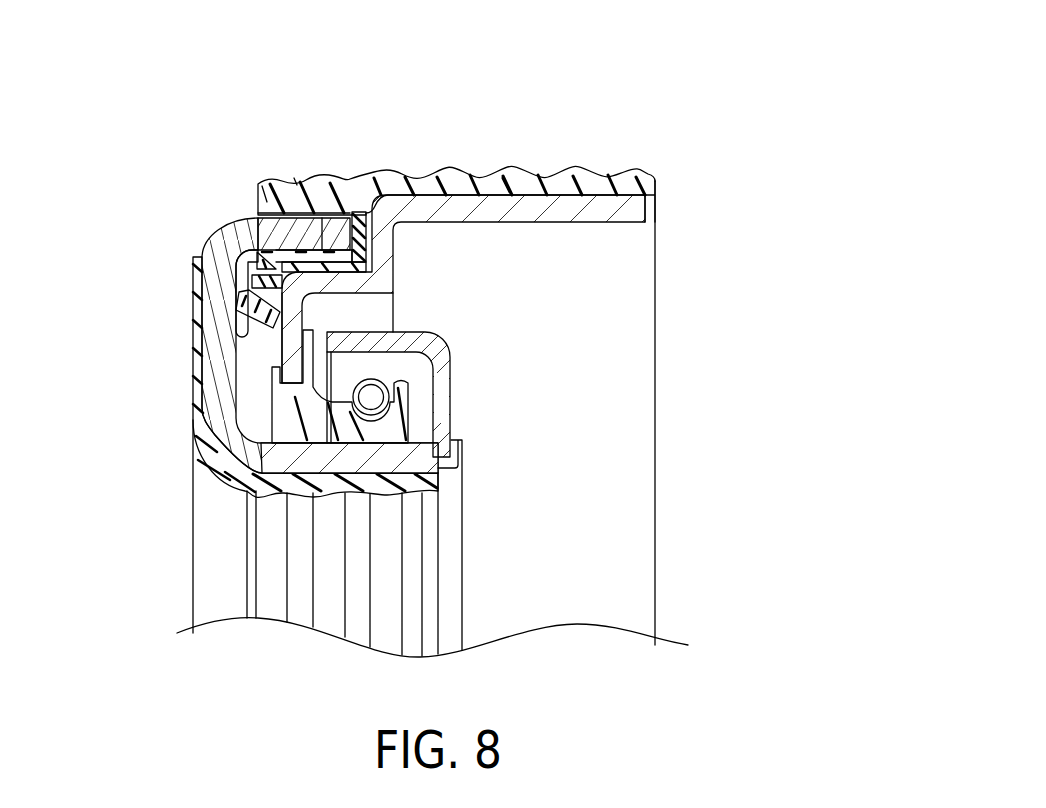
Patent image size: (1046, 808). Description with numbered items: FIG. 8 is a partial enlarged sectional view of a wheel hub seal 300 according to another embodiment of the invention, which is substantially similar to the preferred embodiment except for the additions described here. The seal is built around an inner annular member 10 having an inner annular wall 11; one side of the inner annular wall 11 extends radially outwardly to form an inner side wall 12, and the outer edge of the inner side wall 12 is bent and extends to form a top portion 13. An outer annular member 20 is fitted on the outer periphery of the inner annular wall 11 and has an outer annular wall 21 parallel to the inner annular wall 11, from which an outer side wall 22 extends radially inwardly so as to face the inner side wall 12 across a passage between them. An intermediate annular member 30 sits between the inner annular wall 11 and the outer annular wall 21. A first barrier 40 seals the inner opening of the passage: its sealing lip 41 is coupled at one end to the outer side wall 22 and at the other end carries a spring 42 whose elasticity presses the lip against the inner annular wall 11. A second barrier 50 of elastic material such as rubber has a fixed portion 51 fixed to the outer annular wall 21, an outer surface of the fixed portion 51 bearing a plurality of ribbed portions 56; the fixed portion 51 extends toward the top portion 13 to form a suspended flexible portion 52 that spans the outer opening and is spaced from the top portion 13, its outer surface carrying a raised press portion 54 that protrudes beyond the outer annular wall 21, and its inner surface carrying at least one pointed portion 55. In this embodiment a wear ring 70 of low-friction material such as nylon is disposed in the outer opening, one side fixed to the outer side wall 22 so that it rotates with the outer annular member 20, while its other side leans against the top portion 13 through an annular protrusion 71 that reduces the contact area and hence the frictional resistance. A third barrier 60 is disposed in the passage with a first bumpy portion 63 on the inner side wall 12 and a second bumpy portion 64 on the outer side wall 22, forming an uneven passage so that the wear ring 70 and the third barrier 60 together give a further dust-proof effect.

The sealing assembly 300 is at (638, 112).
The inner annular member 10 is at (182, 408).
The inner annular wall 11 is at (275, 462).
The inner side wall 12 is at (261, 437).
The top portion 13 is at (325, 233).
The outer annular member 20 is at (532, 219).
The outer annular wall 21 is at (637, 205).
The outer side wall 22 is at (300, 350).
The intermediate annular member 30 is at (462, 342).
The first barrier 40 is at (413, 405).
The sealing lip 41 is at (392, 420).
The spring 42 is at (385, 383).
The second barrier 50 is at (406, 144).
The fixed portion 51 is at (432, 185).
The flexible portion 52 is at (267, 202).
The press portion 54 is at (296, 180).
The pointed portion 55 is at (252, 202).
The ribbed portions 56 is at (513, 172).
The third barrier 60 is at (217, 277).
The first bumpy portion 63 is at (194, 263).
The second bumpy portion 64 is at (236, 226).
The wear ring 70 is at (362, 195).
The annular protrusion 71 is at (395, 240).